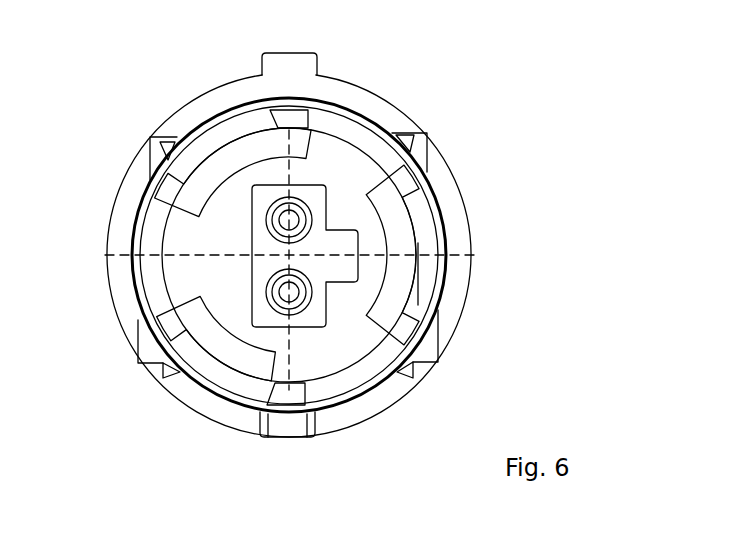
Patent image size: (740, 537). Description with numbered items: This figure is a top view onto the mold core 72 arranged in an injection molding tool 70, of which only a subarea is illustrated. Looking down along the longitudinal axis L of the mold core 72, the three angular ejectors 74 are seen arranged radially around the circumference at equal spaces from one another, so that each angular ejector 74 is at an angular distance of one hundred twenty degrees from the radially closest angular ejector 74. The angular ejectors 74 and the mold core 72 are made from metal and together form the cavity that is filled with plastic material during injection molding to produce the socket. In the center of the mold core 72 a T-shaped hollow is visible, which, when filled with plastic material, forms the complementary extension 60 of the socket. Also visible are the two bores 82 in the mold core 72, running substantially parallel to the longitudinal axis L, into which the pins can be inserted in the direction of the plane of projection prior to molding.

The injection molding tool 70 is at (482, 133).
The mold core 72 is at (245, 88).
The angular ejector 74 is at (220, 133).
The extension 60 is at (322, 240).
The bores 82 is at (297, 223).
The longitudinal axis L is at (283, 250).